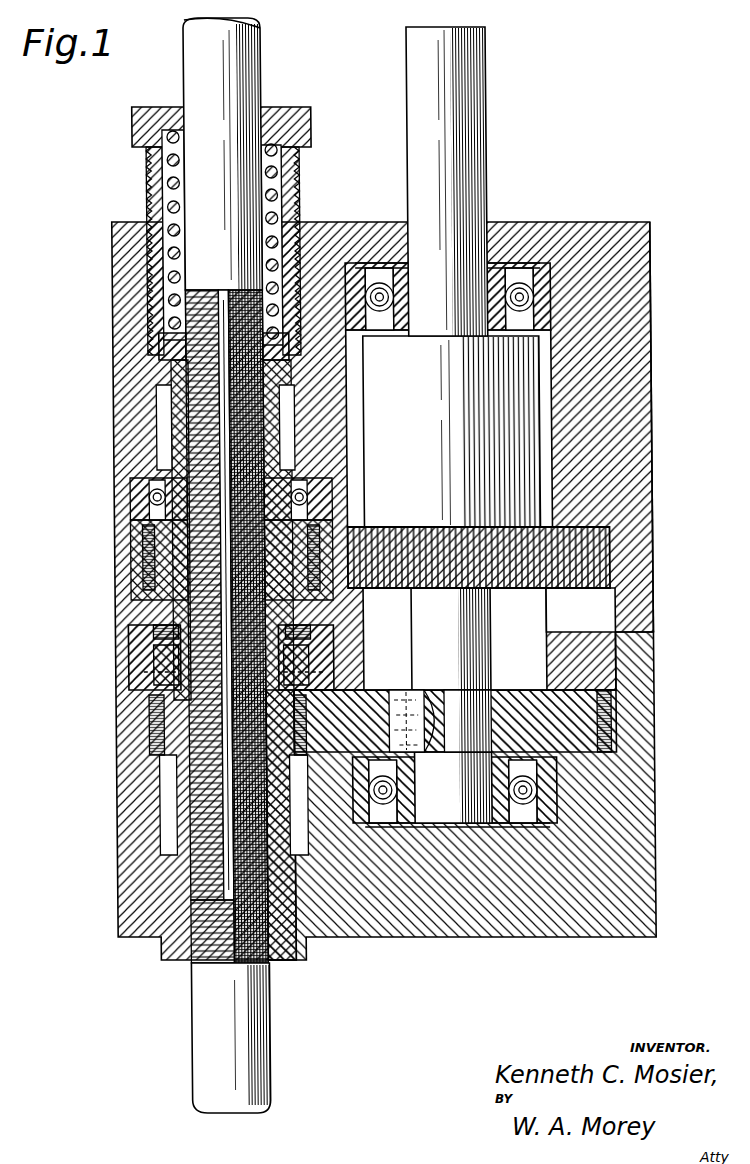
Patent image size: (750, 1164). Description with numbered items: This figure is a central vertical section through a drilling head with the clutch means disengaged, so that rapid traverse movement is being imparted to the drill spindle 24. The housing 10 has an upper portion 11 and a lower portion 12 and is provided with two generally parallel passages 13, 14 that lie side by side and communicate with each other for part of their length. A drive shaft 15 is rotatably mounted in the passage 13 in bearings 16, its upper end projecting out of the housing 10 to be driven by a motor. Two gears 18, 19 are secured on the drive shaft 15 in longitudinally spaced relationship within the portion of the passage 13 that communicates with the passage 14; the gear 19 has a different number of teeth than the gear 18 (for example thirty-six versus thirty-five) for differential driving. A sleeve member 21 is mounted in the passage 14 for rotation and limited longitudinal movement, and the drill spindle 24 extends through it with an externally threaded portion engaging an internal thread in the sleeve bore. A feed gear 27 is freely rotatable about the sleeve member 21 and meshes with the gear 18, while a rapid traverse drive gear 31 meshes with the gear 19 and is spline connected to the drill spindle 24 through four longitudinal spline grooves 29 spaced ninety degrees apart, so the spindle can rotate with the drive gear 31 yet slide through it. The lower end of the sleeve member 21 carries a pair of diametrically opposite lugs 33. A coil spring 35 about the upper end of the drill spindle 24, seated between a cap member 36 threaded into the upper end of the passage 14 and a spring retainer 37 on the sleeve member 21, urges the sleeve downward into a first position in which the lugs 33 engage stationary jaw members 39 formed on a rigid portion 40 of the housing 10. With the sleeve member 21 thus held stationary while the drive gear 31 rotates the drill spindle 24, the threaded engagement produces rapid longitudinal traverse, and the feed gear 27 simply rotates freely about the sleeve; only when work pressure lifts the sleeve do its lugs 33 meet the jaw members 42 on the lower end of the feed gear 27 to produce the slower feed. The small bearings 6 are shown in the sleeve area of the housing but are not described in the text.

The ball bearings 6 is at (126, 527).
The housing 10 is at (654, 272).
The upper portion 11 is at (648, 445).
The lower portion 12 is at (640, 818).
The passage 13 is at (552, 431).
The passage 14 is at (160, 415).
The drive shaft 15 is at (545, 370).
The bearings 16 is at (520, 290).
The gear 18 is at (607, 548).
The gear 19 is at (578, 717).
The sleeve member 21 is at (175, 455).
The drill spindle 24 is at (205, 1027).
The feed gear 27 is at (160, 565).
The spline grooves 29 is at (150, 800).
The drive gear 31 is at (150, 725).
The lugs 33 is at (155, 650).
The coil spring 35 is at (147, 283).
The cap member 36 is at (313, 128).
The spring retainer 37 is at (165, 350).
The jaw members 39 is at (160, 672).
The rigid portion 40 is at (140, 695).
The jaw members 42 is at (150, 628).